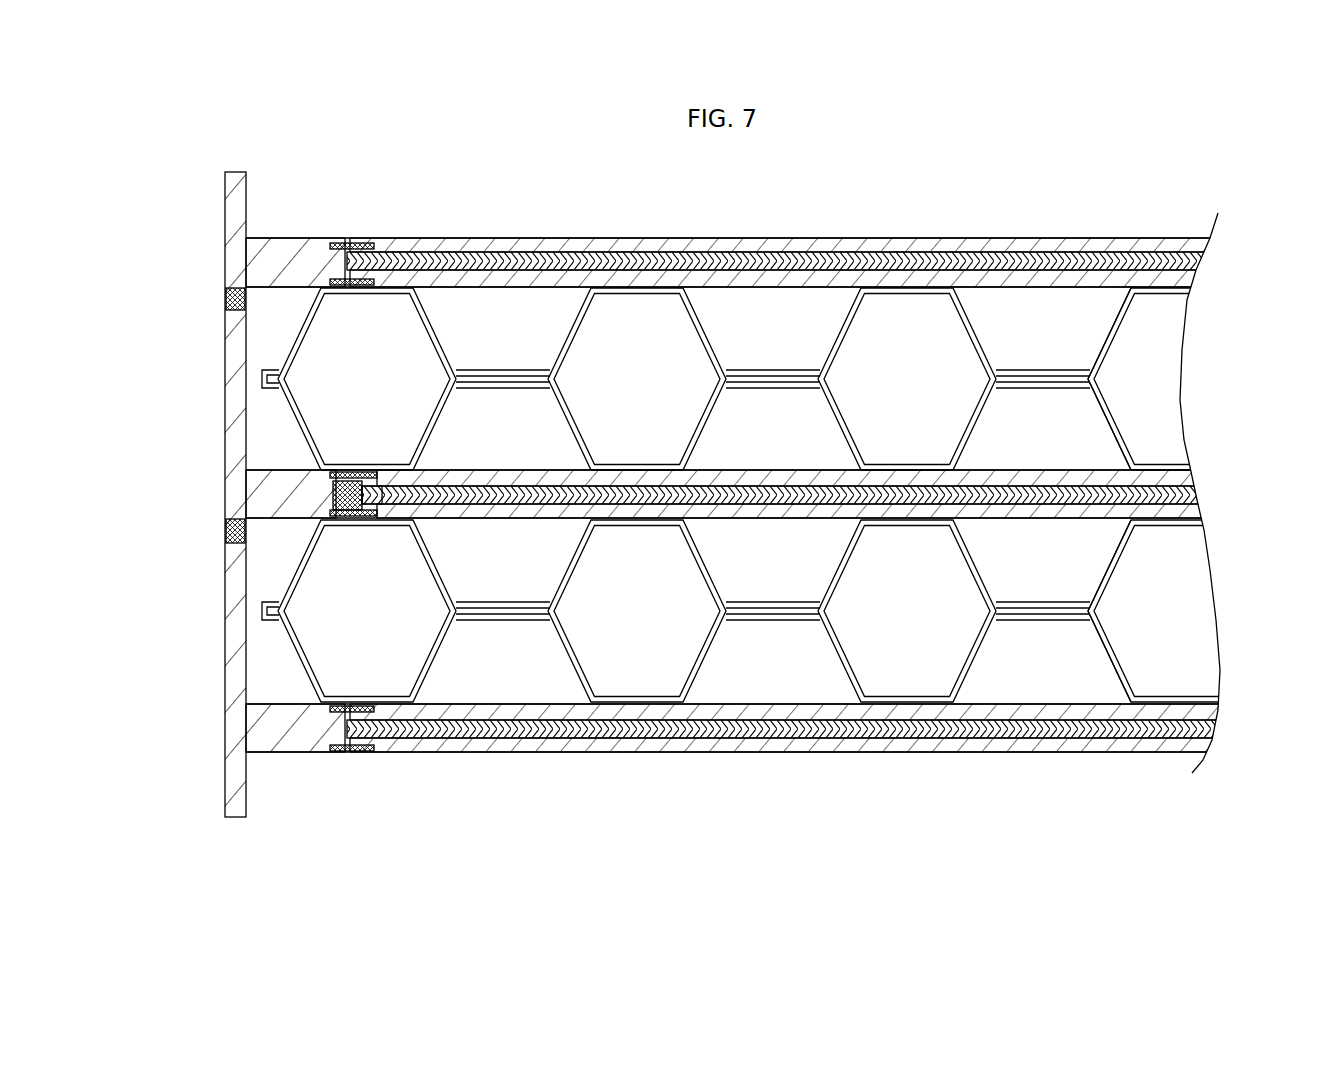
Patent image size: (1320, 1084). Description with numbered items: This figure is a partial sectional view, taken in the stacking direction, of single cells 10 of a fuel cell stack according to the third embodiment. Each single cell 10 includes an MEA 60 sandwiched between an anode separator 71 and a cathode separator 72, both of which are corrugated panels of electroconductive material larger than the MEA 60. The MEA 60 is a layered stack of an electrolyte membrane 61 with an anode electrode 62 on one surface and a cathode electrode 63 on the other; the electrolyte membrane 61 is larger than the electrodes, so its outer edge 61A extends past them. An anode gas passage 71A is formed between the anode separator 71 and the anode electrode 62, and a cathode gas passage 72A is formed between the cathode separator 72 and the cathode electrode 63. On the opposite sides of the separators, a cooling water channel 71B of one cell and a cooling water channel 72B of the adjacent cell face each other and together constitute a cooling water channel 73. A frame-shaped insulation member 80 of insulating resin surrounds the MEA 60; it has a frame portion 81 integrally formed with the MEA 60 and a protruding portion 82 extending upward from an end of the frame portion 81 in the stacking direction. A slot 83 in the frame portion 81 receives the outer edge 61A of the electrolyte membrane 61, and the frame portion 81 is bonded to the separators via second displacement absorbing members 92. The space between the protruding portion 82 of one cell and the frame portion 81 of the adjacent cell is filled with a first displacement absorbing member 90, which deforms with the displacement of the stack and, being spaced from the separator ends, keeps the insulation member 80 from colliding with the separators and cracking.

The single cell 10 is at (203, 246).
The MEA 60 is at (1268, 447).
The electrolyte membrane 61 is at (1203, 493).
The outer edge 61A is at (356, 530).
The anode electrode 62 is at (1205, 480).
The cathode electrode 63 is at (1203, 510).
The anode separator 71 is at (1115, 395).
The anode gas passage 71A is at (1047, 432).
The cooling water channel 71B is at (921, 435).
The cathode separator 72 is at (1125, 304).
The cathode gas passage 72A is at (1048, 563).
The cooling water channel 72B is at (893, 320).
The cooling water channel 73 is at (852, 172).
The insulation member 80 is at (172, 440).
The frame portion 81 is at (275, 497).
The protruding portion 82 is at (232, 432).
The slot 83 is at (380, 508).
The first displacement absorbing member 90 is at (225, 298).
The second displacement absorbing member 92 is at (352, 482).